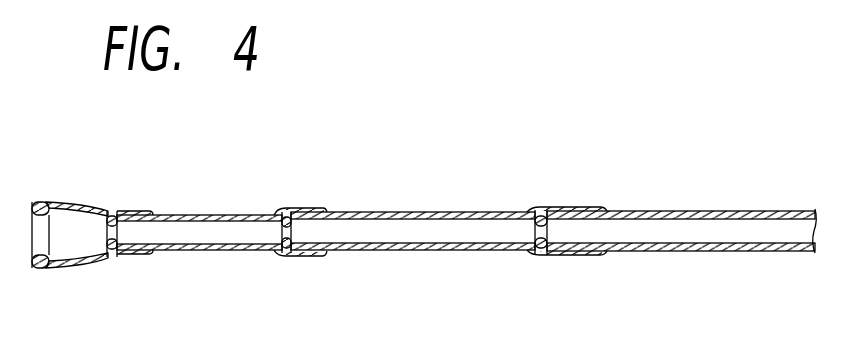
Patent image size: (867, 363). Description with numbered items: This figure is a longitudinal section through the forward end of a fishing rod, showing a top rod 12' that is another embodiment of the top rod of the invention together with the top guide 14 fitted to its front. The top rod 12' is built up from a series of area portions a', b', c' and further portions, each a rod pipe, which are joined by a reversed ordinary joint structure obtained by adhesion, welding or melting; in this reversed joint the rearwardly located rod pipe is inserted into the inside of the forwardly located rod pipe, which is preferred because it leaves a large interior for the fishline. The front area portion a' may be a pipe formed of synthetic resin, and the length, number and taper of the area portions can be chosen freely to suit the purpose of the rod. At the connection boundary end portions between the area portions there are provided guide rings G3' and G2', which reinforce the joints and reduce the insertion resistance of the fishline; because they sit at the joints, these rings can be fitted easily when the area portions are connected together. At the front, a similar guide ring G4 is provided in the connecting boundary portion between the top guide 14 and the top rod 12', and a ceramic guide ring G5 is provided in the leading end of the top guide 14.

The top guide 14 is at (92, 235).
The guide ring G5 is at (40, 268).
The guide ring G4 is at (113, 257).
The top rod 12' is at (466, 209).
The front area portion a' is at (199, 197).
The area portion b' is at (404, 200).
The area portion c' is at (671, 199).
The guide ring G3' is at (296, 267).
The guide ring G2' is at (552, 267).